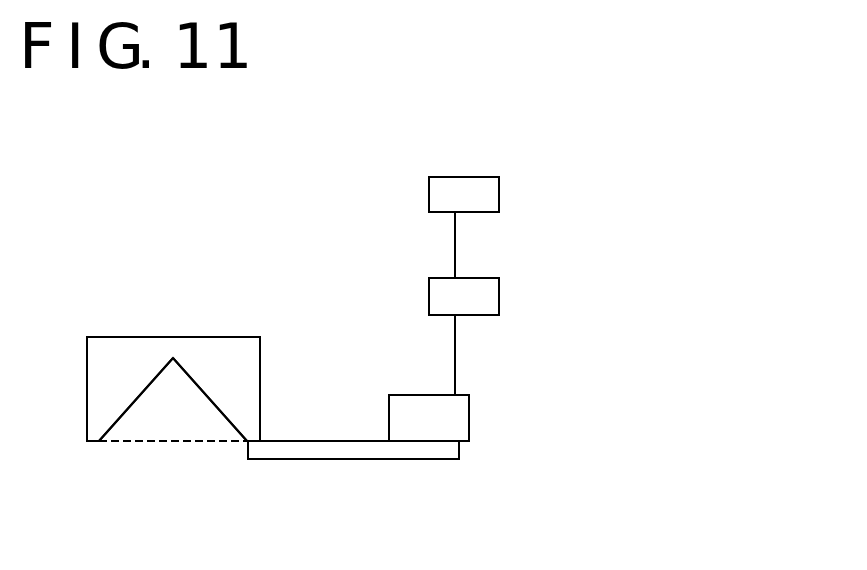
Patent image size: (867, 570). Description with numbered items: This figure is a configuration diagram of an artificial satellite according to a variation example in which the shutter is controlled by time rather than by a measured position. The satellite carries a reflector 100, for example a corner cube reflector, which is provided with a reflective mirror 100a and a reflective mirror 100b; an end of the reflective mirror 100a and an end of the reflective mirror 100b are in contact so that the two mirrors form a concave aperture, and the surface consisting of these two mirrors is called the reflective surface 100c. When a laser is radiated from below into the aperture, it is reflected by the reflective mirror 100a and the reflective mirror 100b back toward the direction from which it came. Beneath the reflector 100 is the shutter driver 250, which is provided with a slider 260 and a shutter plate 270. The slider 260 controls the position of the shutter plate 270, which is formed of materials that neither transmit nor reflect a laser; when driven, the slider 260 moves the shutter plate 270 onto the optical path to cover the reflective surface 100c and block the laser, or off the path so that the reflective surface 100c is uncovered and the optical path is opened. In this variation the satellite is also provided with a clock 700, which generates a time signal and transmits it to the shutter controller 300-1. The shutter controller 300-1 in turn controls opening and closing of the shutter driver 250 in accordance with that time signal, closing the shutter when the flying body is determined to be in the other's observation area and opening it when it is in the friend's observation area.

The reflector 100 is at (224, 342).
The reflective mirror 100a is at (127, 402).
The reflective mirror 100b is at (223, 400).
The reflective surface 100c is at (220, 497).
The clock 700 is at (500, 187).
The shutter controller 300-1 is at (500, 298).
The shutter driver 250 is at (524, 432).
The slider 260 is at (469, 420).
The shutter plate 270 is at (459, 450).